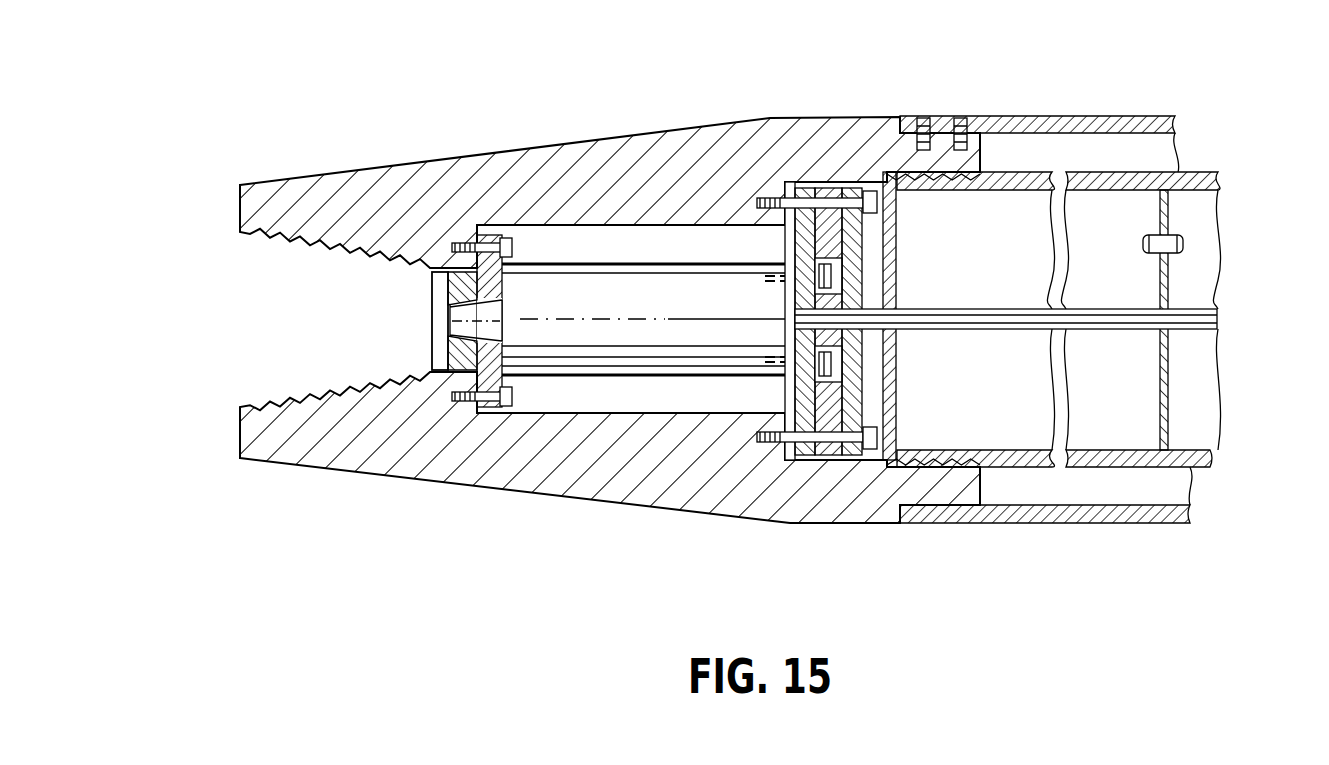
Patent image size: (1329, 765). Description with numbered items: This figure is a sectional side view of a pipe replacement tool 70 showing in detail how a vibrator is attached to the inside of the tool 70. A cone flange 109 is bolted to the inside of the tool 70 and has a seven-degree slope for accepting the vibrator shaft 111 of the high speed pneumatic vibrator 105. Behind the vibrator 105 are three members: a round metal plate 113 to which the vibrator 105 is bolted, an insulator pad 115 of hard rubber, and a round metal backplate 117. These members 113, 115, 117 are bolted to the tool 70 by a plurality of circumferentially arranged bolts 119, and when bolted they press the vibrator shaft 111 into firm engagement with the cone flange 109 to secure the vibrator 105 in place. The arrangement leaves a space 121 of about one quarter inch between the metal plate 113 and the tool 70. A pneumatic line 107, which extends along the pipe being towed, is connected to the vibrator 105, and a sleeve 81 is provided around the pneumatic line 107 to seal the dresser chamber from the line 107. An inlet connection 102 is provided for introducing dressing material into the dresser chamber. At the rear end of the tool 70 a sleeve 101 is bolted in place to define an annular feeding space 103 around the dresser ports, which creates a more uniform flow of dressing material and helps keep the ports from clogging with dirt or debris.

The tool 70 is at (447, 118).
The cone flange 109 is at (432, 291).
The vibrator shaft 111 is at (455, 323).
The pneumatic vibrator 105 is at (572, 335).
The space 121 is at (791, 182).
The round metal plate 113 is at (802, 460).
The insulator pad 115 is at (825, 460).
The round metal backplate 117 is at (855, 460).
The bolts 119 is at (874, 178).
The sleeve 101 is at (1055, 118).
The annular feeding space 103 is at (1128, 150).
The sleeve 81 is at (1110, 298).
The inlet connection 102 is at (1185, 244).
The pneumatic line 107 is at (1200, 316).